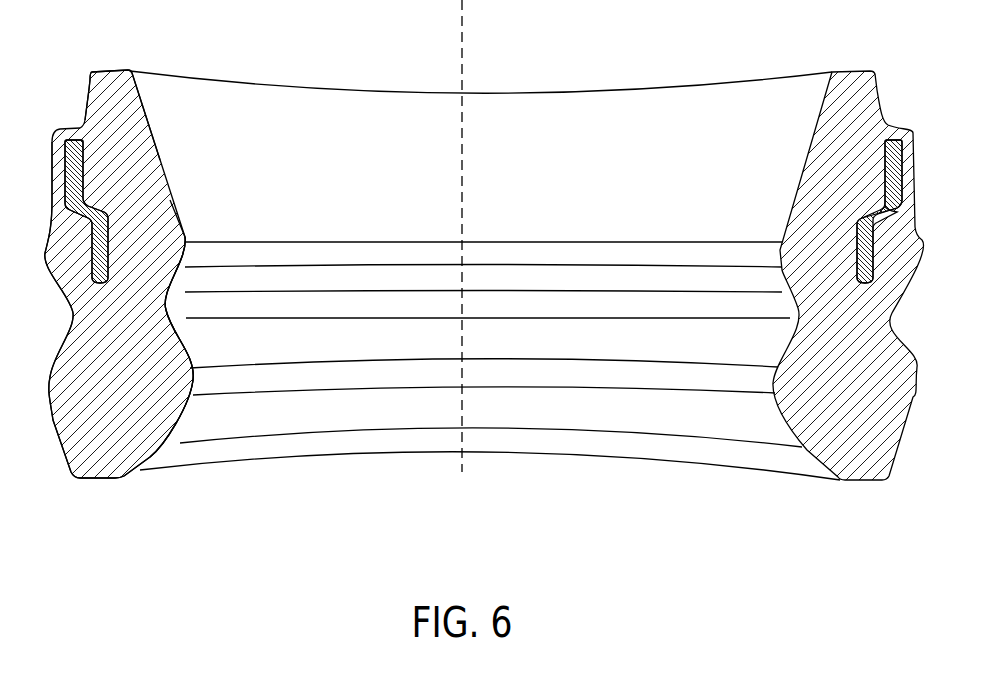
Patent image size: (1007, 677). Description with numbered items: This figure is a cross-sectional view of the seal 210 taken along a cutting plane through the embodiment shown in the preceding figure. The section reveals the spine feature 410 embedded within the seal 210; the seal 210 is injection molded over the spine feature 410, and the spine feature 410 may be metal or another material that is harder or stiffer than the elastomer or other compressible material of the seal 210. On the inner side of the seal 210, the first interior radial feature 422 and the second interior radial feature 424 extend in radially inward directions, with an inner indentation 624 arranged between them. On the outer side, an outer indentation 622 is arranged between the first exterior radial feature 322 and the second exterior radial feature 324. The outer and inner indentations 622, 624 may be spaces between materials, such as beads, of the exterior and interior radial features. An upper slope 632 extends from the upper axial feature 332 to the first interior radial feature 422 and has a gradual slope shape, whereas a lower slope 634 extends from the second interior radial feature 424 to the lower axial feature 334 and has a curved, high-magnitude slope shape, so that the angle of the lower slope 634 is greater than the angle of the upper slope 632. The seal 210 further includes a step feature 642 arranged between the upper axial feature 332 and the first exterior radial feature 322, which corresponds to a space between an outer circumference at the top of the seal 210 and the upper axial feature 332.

The seal 210 is at (797, 508).
The first exterior radial feature 322 is at (48, 238).
The second exterior radial feature 324 is at (53, 388).
The upper axial feature 332 is at (128, 70).
The lower axial feature 334 is at (98, 479).
The spine feature 410 is at (108, 213).
The first interior radial feature 422 is at (185, 237).
The second interior radial feature 424 is at (193, 382).
The outer indentation 622 is at (73, 313).
The inner indentation 624 is at (166, 308).
The upper slope 632 is at (142, 108).
The lower slope 634 is at (173, 428).
The step feature 642 is at (88, 96).